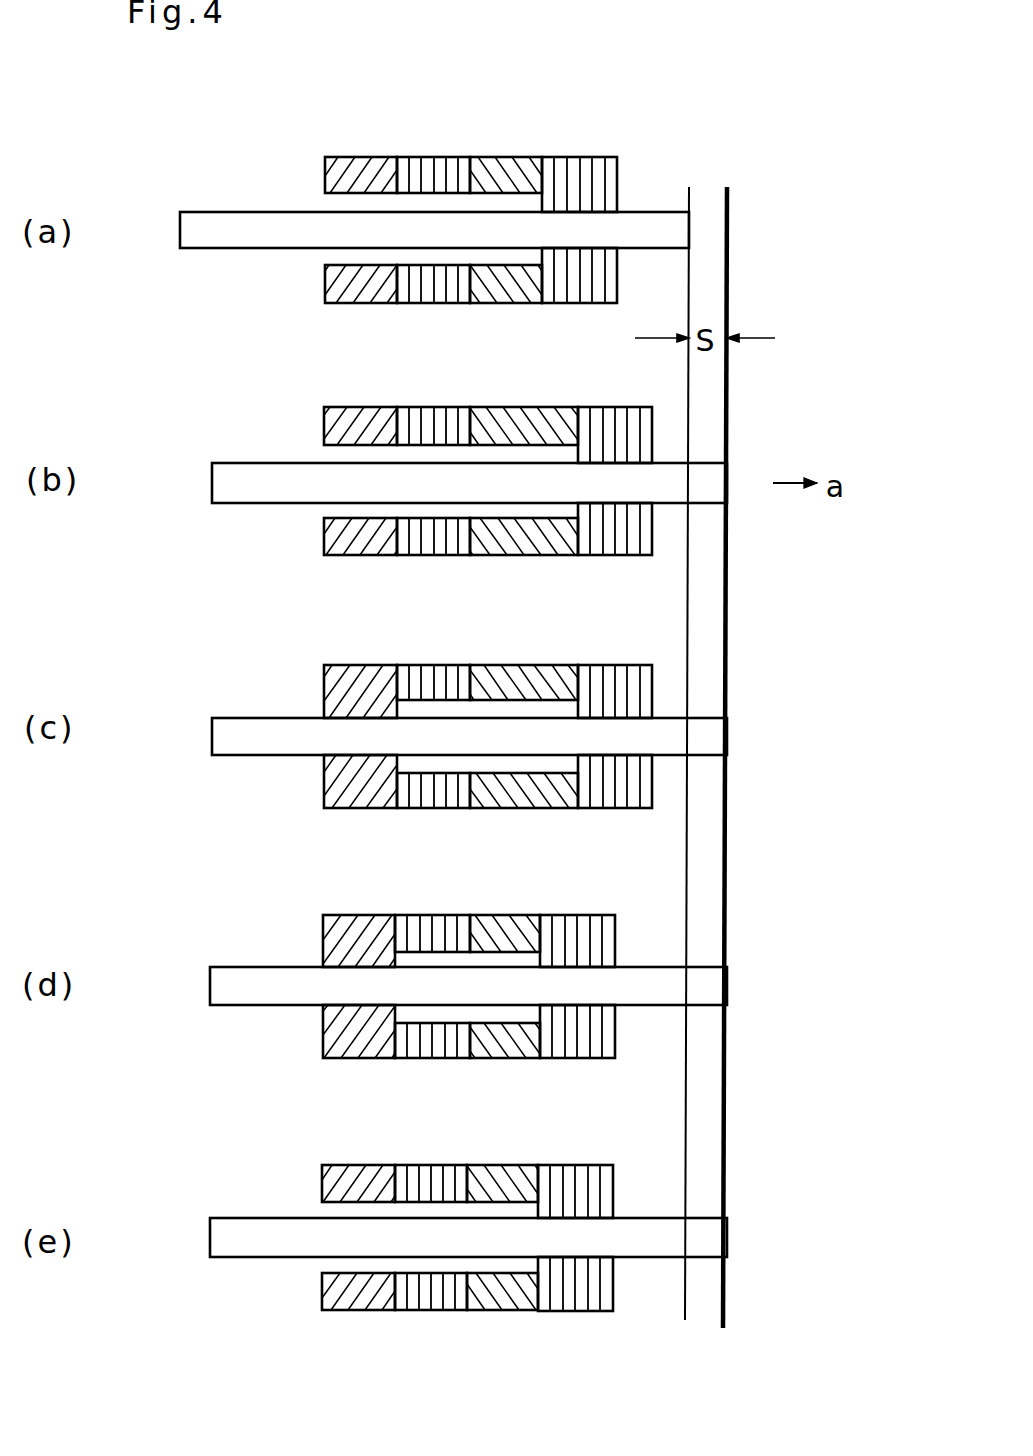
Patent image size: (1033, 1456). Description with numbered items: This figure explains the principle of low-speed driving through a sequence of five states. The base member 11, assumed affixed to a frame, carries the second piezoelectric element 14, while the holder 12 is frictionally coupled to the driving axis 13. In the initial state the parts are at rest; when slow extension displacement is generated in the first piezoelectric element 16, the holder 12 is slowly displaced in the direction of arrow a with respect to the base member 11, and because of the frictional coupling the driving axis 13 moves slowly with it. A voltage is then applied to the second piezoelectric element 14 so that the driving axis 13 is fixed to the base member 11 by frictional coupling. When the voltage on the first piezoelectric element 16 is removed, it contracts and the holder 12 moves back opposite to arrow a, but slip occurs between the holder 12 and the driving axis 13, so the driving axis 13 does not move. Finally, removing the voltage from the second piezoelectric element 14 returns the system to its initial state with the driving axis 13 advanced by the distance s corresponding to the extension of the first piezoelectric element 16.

The base member 11 is at (441, 157).
The holder 12 is at (587, 167).
The driving axis 13 is at (262, 232).
The second piezoelectric element 14 is at (359, 157).
The first piezoelectric element 16 is at (513, 158).